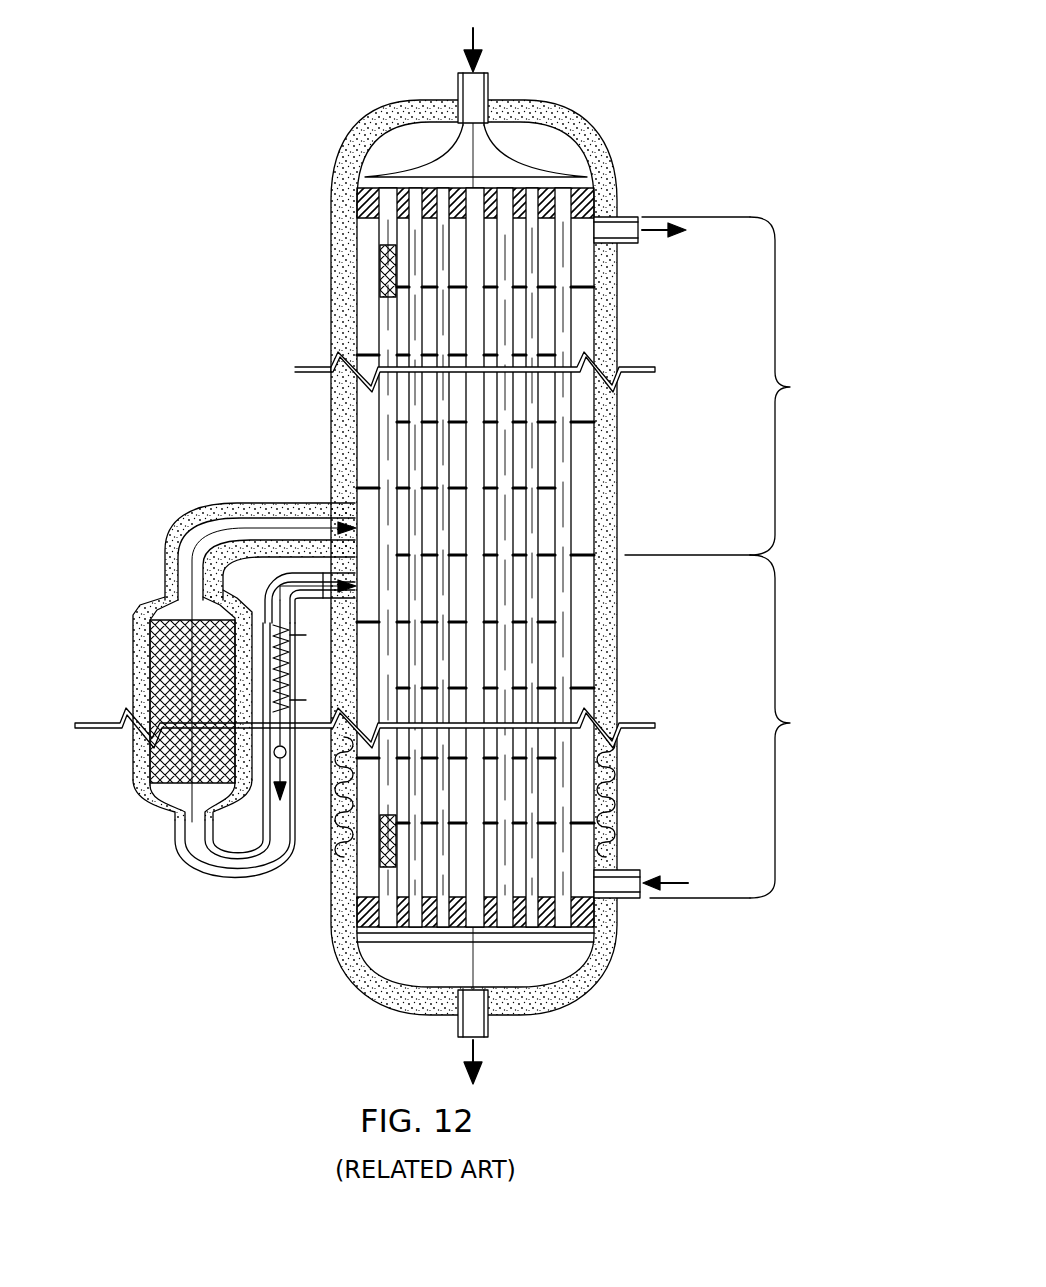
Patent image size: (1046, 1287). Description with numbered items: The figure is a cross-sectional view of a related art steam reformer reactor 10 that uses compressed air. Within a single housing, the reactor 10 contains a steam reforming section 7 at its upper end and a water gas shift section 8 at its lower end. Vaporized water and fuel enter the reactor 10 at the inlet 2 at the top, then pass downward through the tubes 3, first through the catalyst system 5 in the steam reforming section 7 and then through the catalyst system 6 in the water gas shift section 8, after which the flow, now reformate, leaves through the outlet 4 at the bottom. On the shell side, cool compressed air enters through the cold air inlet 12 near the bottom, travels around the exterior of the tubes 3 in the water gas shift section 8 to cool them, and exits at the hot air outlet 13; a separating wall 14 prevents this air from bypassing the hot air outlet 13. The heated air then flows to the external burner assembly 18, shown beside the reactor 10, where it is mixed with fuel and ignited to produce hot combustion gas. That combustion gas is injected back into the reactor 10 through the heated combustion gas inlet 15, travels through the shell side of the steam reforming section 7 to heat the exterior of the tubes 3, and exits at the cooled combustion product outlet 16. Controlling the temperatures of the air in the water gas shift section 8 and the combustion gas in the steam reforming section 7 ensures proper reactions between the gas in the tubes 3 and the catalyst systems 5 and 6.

The inlet 2 is at (488, 74).
The tubes 3 is at (596, 196).
The outlet 4 is at (488, 1036).
The catalyst system 5 is at (376, 256).
The catalyst system 6 is at (386, 850).
The steam reforming section 7 is at (729, 386).
The water gas shift section 8 is at (744, 726).
The reactor 10 is at (676, 306).
The cold air inlet 12 is at (648, 865).
The hot air outlet 13 is at (345, 562).
The separating wall 14 is at (586, 554).
The heated combustion gas inlet 15 is at (342, 504).
The cooled combustion product outlet 16 is at (604, 214).
The external burner assembly 18 is at (135, 600).